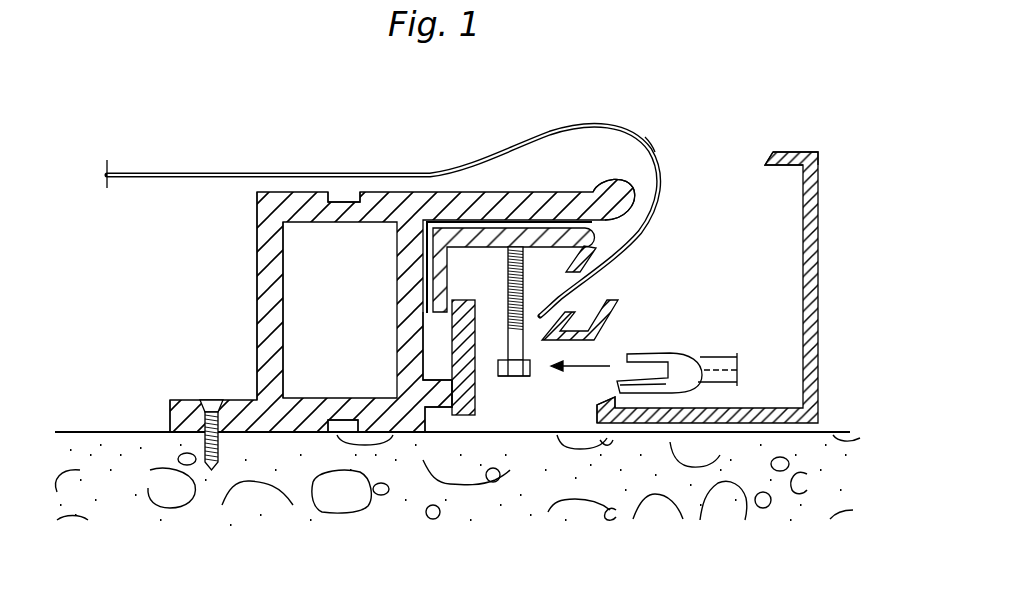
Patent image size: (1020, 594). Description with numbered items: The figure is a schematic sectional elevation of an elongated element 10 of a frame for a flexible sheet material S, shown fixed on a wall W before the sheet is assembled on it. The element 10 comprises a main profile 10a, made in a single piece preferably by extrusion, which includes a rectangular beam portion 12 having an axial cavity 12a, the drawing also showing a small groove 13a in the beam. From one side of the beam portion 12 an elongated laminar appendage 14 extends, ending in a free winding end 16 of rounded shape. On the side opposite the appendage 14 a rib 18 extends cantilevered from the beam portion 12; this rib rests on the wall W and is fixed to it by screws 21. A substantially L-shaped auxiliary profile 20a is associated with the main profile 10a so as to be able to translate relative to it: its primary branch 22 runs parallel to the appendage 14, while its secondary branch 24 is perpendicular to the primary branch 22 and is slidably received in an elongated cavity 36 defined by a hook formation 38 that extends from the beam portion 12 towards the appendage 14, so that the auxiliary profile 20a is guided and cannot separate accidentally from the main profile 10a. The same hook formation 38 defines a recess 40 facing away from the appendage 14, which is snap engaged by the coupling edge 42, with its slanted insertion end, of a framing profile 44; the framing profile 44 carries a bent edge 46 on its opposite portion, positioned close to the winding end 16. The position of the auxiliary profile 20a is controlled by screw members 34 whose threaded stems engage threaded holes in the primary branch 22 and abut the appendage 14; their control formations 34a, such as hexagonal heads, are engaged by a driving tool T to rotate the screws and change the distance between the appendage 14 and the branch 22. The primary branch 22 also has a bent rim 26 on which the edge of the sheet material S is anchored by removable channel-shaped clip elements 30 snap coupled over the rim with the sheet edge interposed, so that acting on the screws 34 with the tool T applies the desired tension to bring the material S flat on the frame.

The elongated element 10 is at (395, 316).
The main profile 10a is at (250, 285).
The beam portion 12 is at (270, 243).
The axial cavity 12a is at (288, 258).
The groove 13a is at (347, 198).
The elongated laminar appendage 14 is at (516, 212).
The free winding end 16 is at (610, 180).
The rib 18 is at (170, 433).
The auxiliary profile 20a is at (612, 230).
The screws 21 is at (218, 433).
The primary branch 22 is at (467, 237).
The secondary branch 24 is at (432, 266).
The bent rim 26 is at (594, 262).
The clip elements 30 is at (616, 302).
The screw members 34 is at (534, 356).
The control formation 34a is at (515, 378).
The elongated cavity 36 is at (436, 372).
The hook formation 38 is at (473, 367).
The recess 40 is at (433, 408).
The coupling edge 42 is at (605, 423).
The framing profile 44 is at (798, 425).
The bent edge 46 is at (792, 152).
The flexible sheet material S is at (645, 137).
The driving tool T is at (690, 360).
The wall W is at (750, 438).